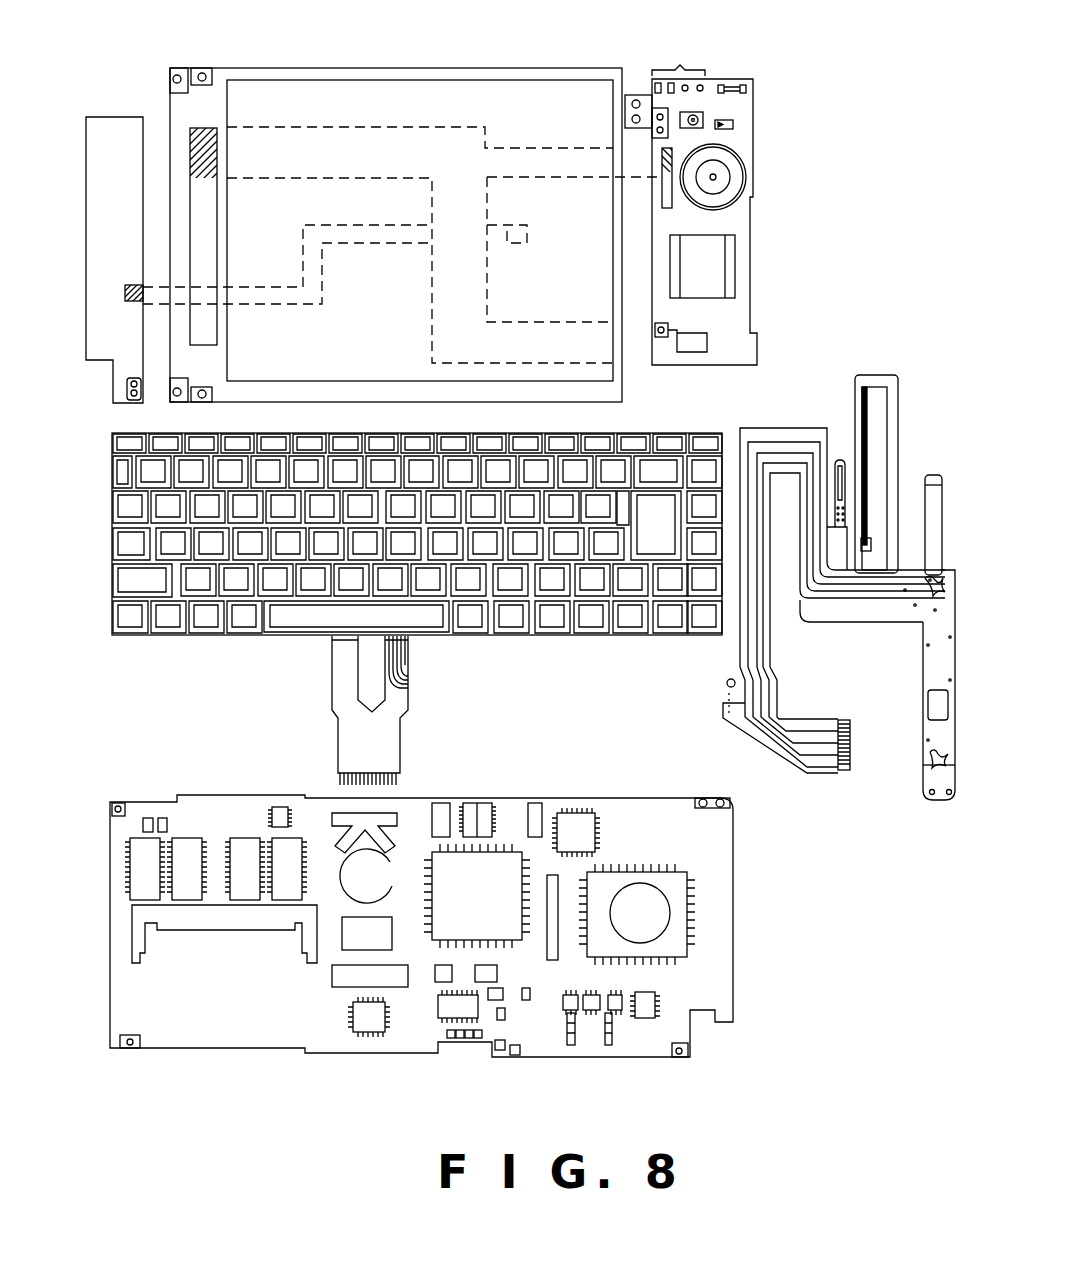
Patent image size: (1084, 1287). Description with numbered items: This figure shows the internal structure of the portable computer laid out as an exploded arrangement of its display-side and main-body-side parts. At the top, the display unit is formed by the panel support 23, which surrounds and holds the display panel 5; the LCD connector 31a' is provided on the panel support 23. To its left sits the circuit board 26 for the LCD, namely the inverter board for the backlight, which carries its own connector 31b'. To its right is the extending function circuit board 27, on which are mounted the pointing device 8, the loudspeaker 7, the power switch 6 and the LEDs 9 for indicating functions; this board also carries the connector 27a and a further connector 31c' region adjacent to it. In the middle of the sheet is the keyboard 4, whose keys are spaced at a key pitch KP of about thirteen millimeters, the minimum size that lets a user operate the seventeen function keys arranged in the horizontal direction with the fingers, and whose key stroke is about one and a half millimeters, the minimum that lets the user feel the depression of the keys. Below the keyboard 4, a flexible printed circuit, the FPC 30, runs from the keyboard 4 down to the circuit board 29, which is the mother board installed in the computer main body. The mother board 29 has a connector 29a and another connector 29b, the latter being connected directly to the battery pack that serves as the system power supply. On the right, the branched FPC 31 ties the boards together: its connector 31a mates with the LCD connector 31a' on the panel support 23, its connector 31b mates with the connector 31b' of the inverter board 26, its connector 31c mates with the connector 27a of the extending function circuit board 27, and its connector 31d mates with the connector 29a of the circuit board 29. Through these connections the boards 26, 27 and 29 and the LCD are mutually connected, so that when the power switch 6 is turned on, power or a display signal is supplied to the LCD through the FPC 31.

The panel support 23 is at (440, 68).
The display panel 5 is at (528, 79).
The LEDs for indicating the functions 9 is at (699, 63).
The circuit board for the LCD (inverter board for LCD backlight) 26 is at (117, 117).
The LCD connector 31a' is at (235, 150).
The connector of the inverter board 31b' is at (120, 274).
The connector land region 31c' is at (624, 147).
The extending function circuit board 27 is at (756, 88).
The connector of the extending function circuit board 27a is at (661, 190).
The power switch 6 is at (703, 117).
The loudspeaker 7 is at (733, 184).
The pointing device 8 is at (725, 273).
The keyboard 4 is at (137, 548).
The key pitch KP is at (205, 592).
The FPC 30 is at (410, 706).
The circuit board (mother board) 29 is at (734, 904).
The connector of the circuit board 29a is at (547, 878).
The connector 29b is at (328, 982).
The FPC 31 is at (826, 628).
The connector 31a is at (946, 707).
The connector 31b is at (878, 524).
The connector 31c is at (934, 504).
The connector 31d is at (851, 762).